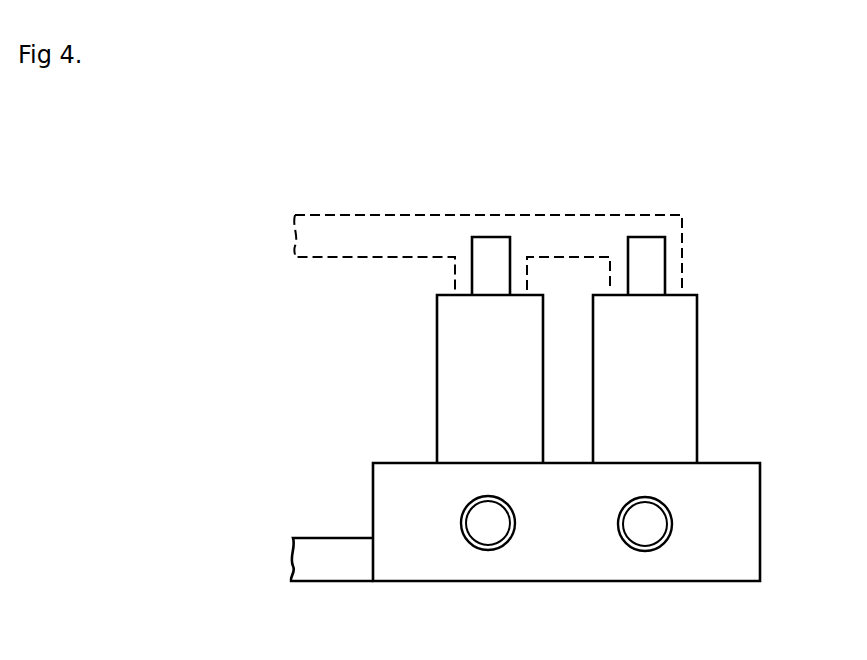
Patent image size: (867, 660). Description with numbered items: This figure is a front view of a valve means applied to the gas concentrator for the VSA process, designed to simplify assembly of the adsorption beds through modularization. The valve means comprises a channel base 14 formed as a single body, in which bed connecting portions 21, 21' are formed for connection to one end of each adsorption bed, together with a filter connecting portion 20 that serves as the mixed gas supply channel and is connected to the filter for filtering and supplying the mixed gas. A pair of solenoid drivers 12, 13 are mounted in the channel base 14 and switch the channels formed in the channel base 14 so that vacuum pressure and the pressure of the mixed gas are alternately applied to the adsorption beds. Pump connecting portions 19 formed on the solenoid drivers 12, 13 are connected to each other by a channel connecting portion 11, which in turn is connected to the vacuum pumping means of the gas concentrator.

The channel connecting portion 11 is at (318, 229).
The solenoid driver 12 is at (450, 385).
The solenoid driver 13 is at (683, 383).
The channel base 14 is at (740, 553).
The pump connecting portions 19 is at (644, 247).
The filter connecting portion 20 is at (318, 556).
The bed connecting portion 21 is at (488, 572).
The bed connecting portion 21' is at (645, 573).